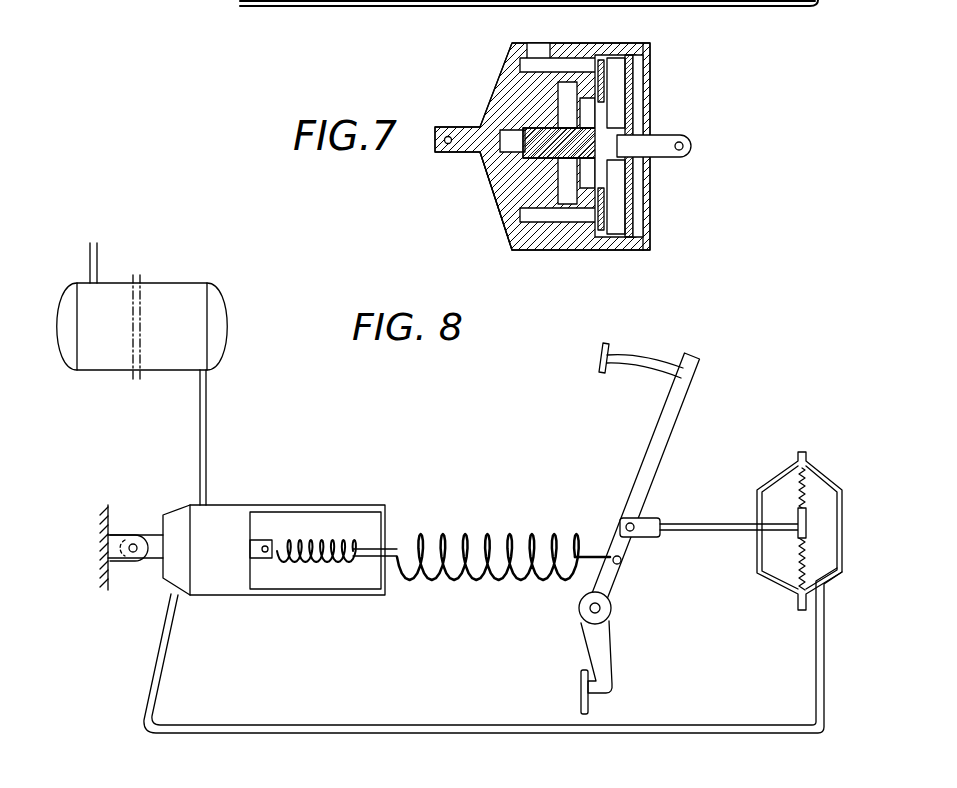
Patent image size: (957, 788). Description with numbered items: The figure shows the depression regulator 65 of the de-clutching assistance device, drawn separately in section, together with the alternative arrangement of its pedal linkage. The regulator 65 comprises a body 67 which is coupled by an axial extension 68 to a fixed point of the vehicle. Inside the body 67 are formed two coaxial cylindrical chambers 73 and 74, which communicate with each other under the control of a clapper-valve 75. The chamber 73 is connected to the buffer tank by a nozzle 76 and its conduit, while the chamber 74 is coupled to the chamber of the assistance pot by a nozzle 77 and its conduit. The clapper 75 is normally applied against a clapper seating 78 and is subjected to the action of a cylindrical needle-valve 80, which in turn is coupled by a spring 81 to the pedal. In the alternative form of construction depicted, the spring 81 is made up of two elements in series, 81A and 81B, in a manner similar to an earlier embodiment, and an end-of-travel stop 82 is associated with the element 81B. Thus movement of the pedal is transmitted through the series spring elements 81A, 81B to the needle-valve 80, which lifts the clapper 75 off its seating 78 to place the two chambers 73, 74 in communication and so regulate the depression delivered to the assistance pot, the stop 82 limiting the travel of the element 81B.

In FIG. 7, the depression regulator 65 is at (494, 65).
In FIG. 7, the body 67 is at (497, 162).
In FIG. 7, the axial extension 68 is at (461, 128).
In FIG. 7, the cylindrical chamber 73 is at (578, 68).
In FIG. 7, the cylindrical chamber 74 is at (565, 196).
In FIG. 7, the clapper-valve 75 is at (598, 67).
In FIG. 7, the nozzle 76 is at (548, 45).
In FIG. 7, the nozzle 77 is at (503, 196).
In FIG. 7, the clapper seating 78 is at (593, 236).
In FIG. 7, the cylindrical needle-valve 80 is at (600, 140).
In FIG. 8, the spring 81 is at (502, 529).
In FIG. 8, the spring element 81A is at (462, 580).
In FIG. 8, the spring element 81B is at (324, 566).
In FIG. 8, the end-of-travel stop 82 is at (391, 537).